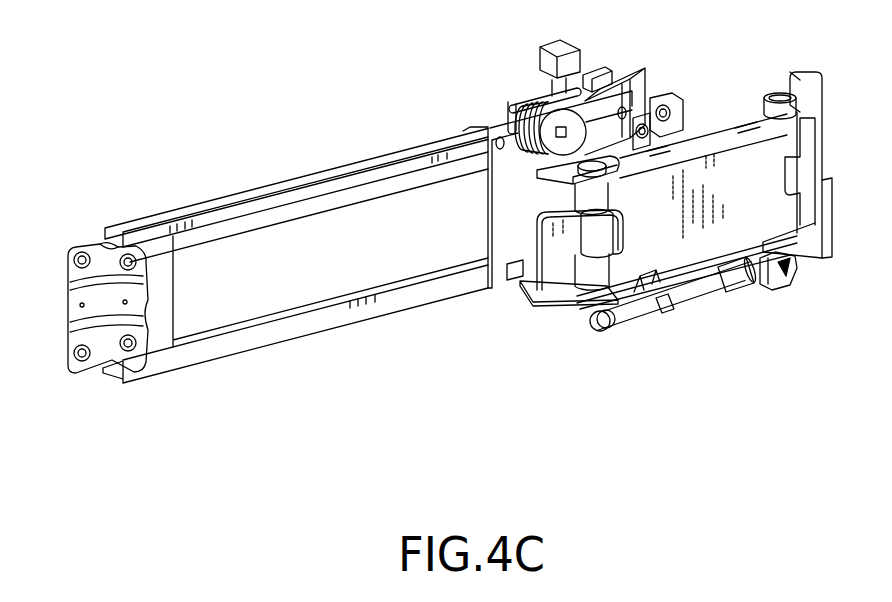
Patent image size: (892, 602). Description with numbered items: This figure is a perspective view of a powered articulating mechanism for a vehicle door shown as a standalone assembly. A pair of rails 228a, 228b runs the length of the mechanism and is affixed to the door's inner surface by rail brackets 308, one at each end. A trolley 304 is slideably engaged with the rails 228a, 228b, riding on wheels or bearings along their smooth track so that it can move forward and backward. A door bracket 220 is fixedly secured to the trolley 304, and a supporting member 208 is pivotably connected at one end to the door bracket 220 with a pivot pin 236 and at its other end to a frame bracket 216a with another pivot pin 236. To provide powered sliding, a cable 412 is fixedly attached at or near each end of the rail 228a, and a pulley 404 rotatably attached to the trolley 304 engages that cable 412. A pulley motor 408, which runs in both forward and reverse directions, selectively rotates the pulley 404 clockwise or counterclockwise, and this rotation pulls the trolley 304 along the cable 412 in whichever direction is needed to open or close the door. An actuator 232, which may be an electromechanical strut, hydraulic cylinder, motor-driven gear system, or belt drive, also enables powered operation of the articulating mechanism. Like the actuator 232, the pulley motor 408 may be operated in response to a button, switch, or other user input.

The supporting member 208 is at (716, 165).
The frame bracket 216a is at (810, 80).
The door bracket 220 is at (567, 173).
The rail 228a is at (206, 216).
The rail 228b is at (235, 343).
The actuator 232 is at (695, 287).
The pivot pin 236 is at (590, 235).
The trolley 304 is at (488, 126).
The rail bracket 308 is at (80, 288).
The pulley 404 is at (543, 103).
The pulley motor 408 is at (597, 75).
The cable 412 is at (413, 188).